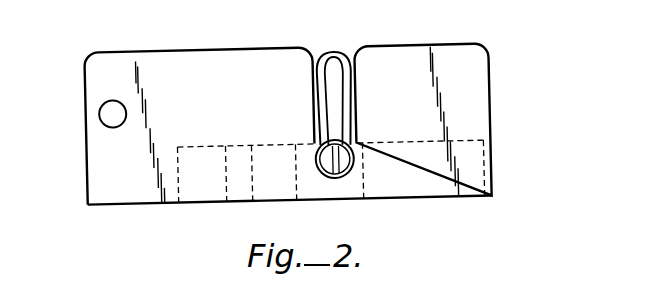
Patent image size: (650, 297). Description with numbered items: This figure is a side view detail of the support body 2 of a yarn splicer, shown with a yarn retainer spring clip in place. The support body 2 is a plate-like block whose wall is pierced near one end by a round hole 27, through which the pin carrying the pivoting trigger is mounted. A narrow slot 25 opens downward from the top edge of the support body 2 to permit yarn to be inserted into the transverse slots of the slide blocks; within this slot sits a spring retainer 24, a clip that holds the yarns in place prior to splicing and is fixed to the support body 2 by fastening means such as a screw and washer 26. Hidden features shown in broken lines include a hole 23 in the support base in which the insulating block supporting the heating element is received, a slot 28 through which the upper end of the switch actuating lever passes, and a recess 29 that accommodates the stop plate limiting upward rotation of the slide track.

The support body 2 is at (478, 42).
The hole 23 is at (363, 141).
The spring retainer 24 is at (343, 53).
The slot 25 is at (322, 52).
The screw and washer 26 is at (342, 165).
The hole 27 is at (107, 112).
The slot 28 is at (234, 143).
The recess 29 is at (487, 162).